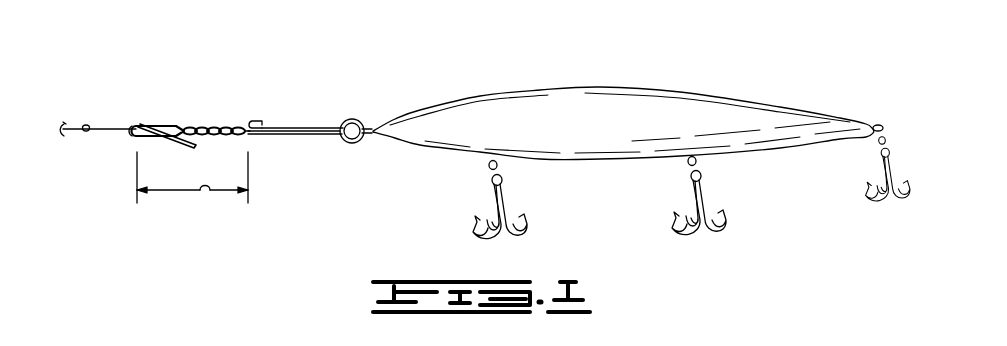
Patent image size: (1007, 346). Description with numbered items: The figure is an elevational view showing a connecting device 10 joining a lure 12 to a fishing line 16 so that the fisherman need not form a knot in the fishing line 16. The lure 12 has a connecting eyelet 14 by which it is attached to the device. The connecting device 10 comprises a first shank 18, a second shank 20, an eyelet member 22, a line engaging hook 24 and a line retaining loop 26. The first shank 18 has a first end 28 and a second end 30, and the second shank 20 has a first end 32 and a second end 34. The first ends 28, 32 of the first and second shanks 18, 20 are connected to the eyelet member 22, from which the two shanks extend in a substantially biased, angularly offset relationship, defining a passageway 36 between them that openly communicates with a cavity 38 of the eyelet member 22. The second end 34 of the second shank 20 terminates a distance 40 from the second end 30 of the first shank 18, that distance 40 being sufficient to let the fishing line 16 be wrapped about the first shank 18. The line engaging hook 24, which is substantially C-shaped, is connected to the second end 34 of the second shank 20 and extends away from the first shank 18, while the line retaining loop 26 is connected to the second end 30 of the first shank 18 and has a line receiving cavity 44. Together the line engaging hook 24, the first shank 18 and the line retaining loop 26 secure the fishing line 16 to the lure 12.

The connecting device 10 is at (376, 52).
The lure 12 is at (638, 88).
The connecting eyelet 14 is at (372, 127).
The fishing line 16 is at (84, 133).
The first shank 18 is at (230, 143).
The second shank 20 is at (294, 120).
The eyelet member 22 is at (363, 150).
The line engaging hook 24 is at (259, 106).
The line retaining loop 26 is at (137, 120).
The first end of first shank 28 is at (343, 139).
The second end of first shank 30 is at (178, 125).
The first end of second shank 32 is at (345, 120).
The second end of second shank 34 is at (275, 127).
The passageway 36 is at (285, 136).
The cavity 38 is at (352, 144).
The distance 40 is at (204, 192).
The line receiving cavity 44 is at (140, 127).